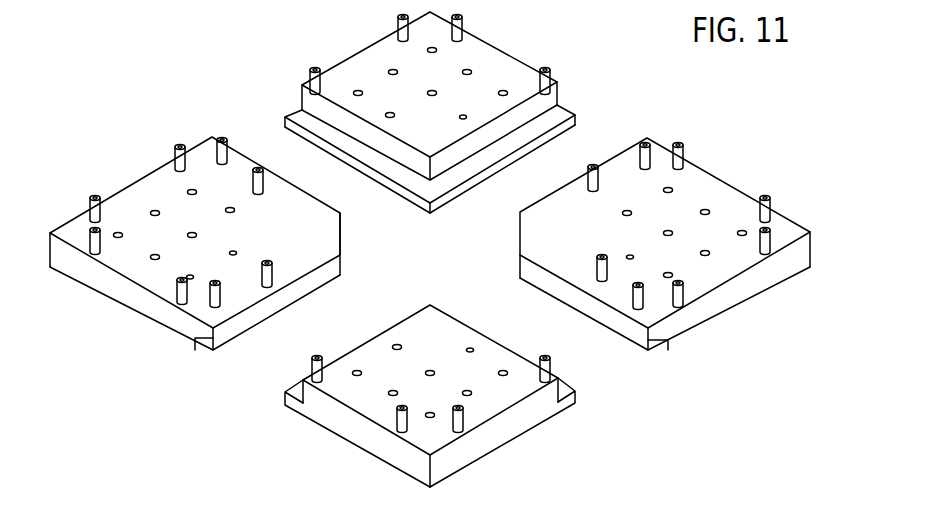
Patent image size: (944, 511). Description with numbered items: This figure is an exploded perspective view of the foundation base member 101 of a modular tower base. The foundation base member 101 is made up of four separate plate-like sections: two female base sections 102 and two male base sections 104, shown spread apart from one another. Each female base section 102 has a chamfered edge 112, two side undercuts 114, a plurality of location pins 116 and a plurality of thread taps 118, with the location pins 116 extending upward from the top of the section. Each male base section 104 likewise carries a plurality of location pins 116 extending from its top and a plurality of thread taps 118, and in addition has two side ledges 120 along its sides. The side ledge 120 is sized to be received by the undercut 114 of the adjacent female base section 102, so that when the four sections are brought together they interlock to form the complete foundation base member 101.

The foundation base member 101 is at (207, 52).
The female base section 102 is at (130, 173).
The male base section 104 is at (510, 48).
The chamfered edge 112 is at (340, 235).
The side undercut 114 is at (203, 353).
The location pin 116 is at (680, 145).
The thread tap 118 is at (233, 255).
The side ledge 120 is at (555, 118).